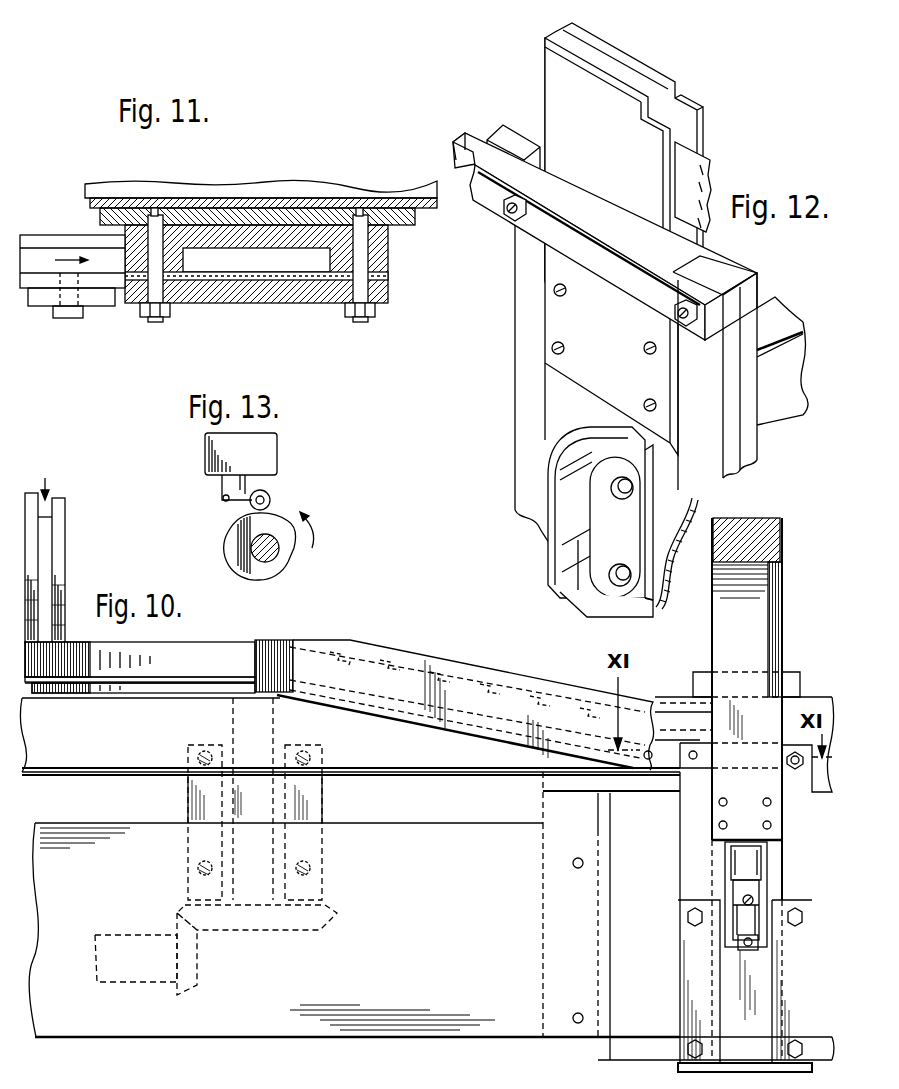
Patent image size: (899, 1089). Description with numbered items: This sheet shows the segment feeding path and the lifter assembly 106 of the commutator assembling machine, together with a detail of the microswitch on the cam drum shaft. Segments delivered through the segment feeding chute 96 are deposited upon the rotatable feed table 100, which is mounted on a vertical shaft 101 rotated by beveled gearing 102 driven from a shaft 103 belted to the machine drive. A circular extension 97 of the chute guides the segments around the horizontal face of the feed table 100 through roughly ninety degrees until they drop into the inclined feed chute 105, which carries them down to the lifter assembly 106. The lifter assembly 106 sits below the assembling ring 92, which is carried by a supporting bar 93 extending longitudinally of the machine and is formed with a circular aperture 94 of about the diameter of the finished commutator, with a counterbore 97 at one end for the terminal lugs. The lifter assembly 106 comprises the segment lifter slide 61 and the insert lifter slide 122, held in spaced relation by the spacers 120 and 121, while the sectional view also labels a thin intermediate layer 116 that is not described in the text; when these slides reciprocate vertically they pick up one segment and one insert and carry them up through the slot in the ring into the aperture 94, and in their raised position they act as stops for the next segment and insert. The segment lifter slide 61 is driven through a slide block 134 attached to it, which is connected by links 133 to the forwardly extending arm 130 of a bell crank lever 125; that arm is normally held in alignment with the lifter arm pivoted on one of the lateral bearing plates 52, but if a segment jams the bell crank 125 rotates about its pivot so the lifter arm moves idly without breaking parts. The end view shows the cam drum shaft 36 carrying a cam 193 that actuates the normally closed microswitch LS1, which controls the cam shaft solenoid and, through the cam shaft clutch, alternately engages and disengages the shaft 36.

In FIG. 10, the lateral bearing plates 52 is at (99, 1022).
In FIG. 12, the segment lifter slide 61 is at (657, 80).
In FIG. 10, the segment lifter slide 61 is at (750, 982).
In FIG. 10, the assembling ring 92 is at (781, 548).
In FIG. 10, the supporting bar 93 is at (150, 766).
In FIG. 10, the circular aperture 94 is at (725, 614).
In FIG. 10, the segment feeding chute 96 is at (60, 547).
In FIG. 10, the circular extension of the chute 97 is at (172, 660).
In FIG. 10, the rotatable feed table 100 is at (182, 688).
In FIG. 10, the vertical shaft 101 is at (320, 853).
In FIG. 10, the beveled gearing 102 is at (262, 927).
In FIG. 10, the shaft 103 is at (107, 945).
In FIG. 11, the inclined feed chute 105 is at (33, 252).
In FIG. 10, the inclined feed chute 105 is at (360, 653).
In FIG. 11, the lifter assembly 106 is at (262, 307).
In FIG. 12, the lifter assembly 106 is at (513, 268).
In FIG. 10, the lifter assembly 106 is at (673, 806).
In FIG. 11, the thin layer 116 is at (318, 282).
In FIG. 11, the spacer 120 is at (387, 274).
In FIG. 12, the spacer 120 is at (690, 283).
In FIG. 12, the spacer 121 is at (697, 176).
In FIG. 12, the insert lifter slide 122 is at (598, 82).
In FIG. 10, the insert lifter slide 122 is at (714, 830).
In FIG. 12, the bell crank lever 125 is at (806, 328).
In FIG. 12, the forwardly extending arm 130 is at (793, 391).
In FIG. 12, the links 133 is at (590, 555).
In FIG. 10, the links 133 is at (752, 898).
In FIG. 12, the slide block 134 is at (613, 602).
In FIG. 10, the slide block 134 is at (737, 945).
In FIG. 13, the microswitch LS1 is at (272, 450).
In FIG. 13, the cam drum shaft 36 is at (262, 550).
In FIG. 13, the cam 193 is at (288, 562).